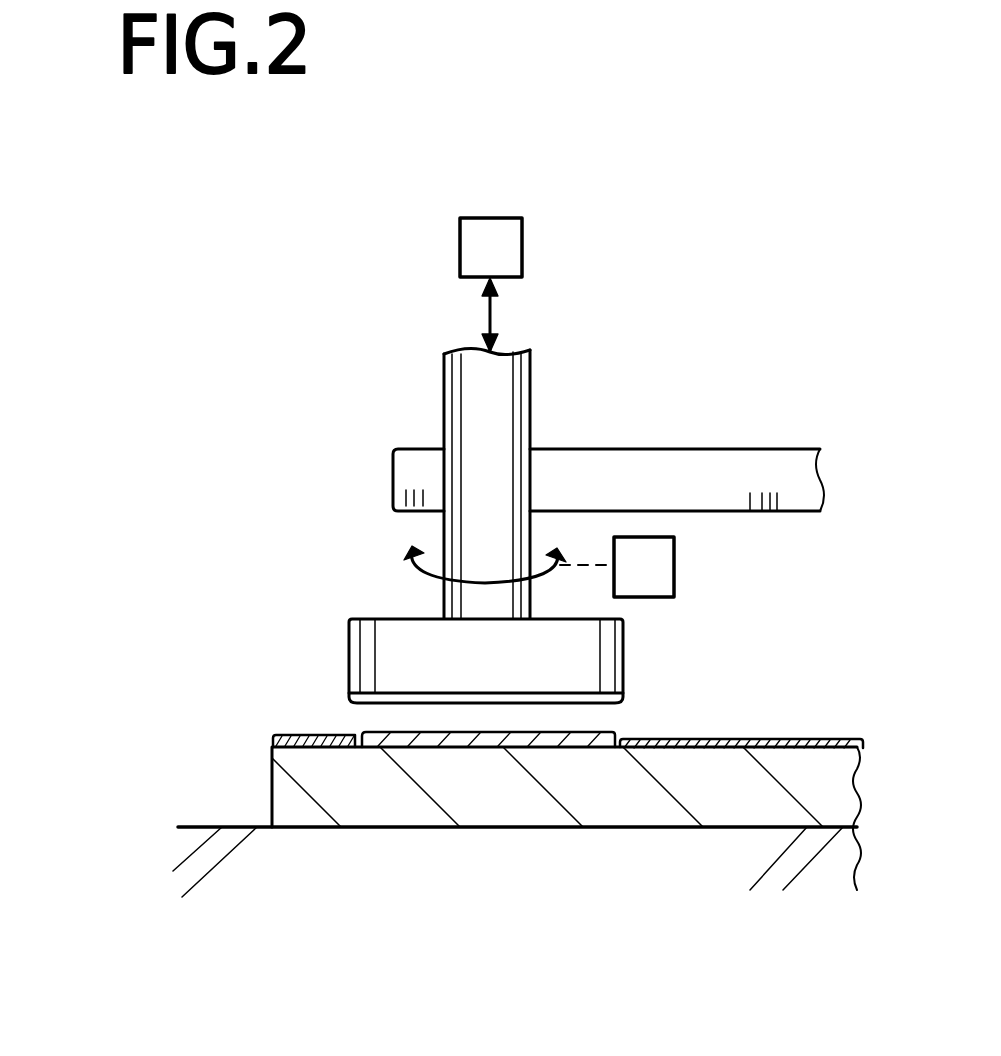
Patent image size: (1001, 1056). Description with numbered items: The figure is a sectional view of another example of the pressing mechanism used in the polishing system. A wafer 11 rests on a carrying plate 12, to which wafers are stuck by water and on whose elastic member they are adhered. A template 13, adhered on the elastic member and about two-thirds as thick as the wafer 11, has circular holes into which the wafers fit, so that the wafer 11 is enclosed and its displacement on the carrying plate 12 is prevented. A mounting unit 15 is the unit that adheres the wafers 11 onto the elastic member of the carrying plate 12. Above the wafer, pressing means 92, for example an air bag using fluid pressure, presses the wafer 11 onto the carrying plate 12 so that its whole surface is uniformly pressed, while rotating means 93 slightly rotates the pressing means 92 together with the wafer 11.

The wafer 11 is at (491, 747).
The carrying plate 12 is at (667, 813).
The template 13 is at (303, 737).
The mounting unit 15 is at (199, 828).
The pressing means 92 is at (507, 250).
The rotating means 93 is at (662, 565).